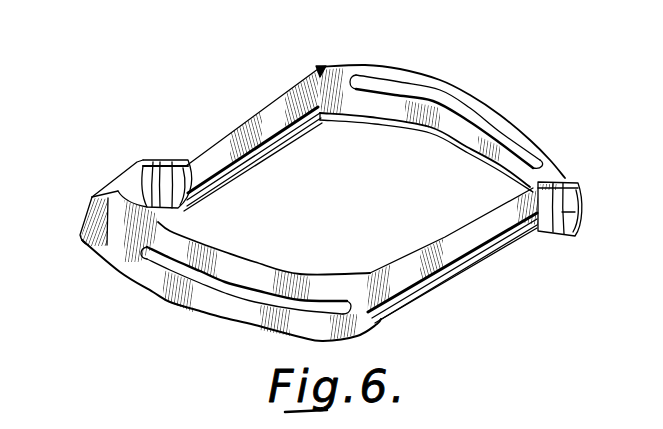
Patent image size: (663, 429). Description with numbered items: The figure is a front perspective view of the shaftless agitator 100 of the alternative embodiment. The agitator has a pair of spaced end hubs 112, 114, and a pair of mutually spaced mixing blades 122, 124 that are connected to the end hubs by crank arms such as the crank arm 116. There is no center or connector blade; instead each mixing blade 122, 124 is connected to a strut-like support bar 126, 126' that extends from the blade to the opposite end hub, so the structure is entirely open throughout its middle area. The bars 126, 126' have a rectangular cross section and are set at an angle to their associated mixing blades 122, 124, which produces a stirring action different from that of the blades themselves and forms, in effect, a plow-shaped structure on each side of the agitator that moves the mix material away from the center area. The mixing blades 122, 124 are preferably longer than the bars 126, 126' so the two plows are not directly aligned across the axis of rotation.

The frame assembly 100 is at (310, 58).
The end hub 112 is at (146, 160).
The end hub 114 is at (567, 178).
The crank arm 116 is at (122, 178).
The mixing blade 122 is at (450, 117).
The mixing blade 124 is at (186, 294).
The support bar 126 is at (253, 140).
The support bar 126' is at (453, 255).